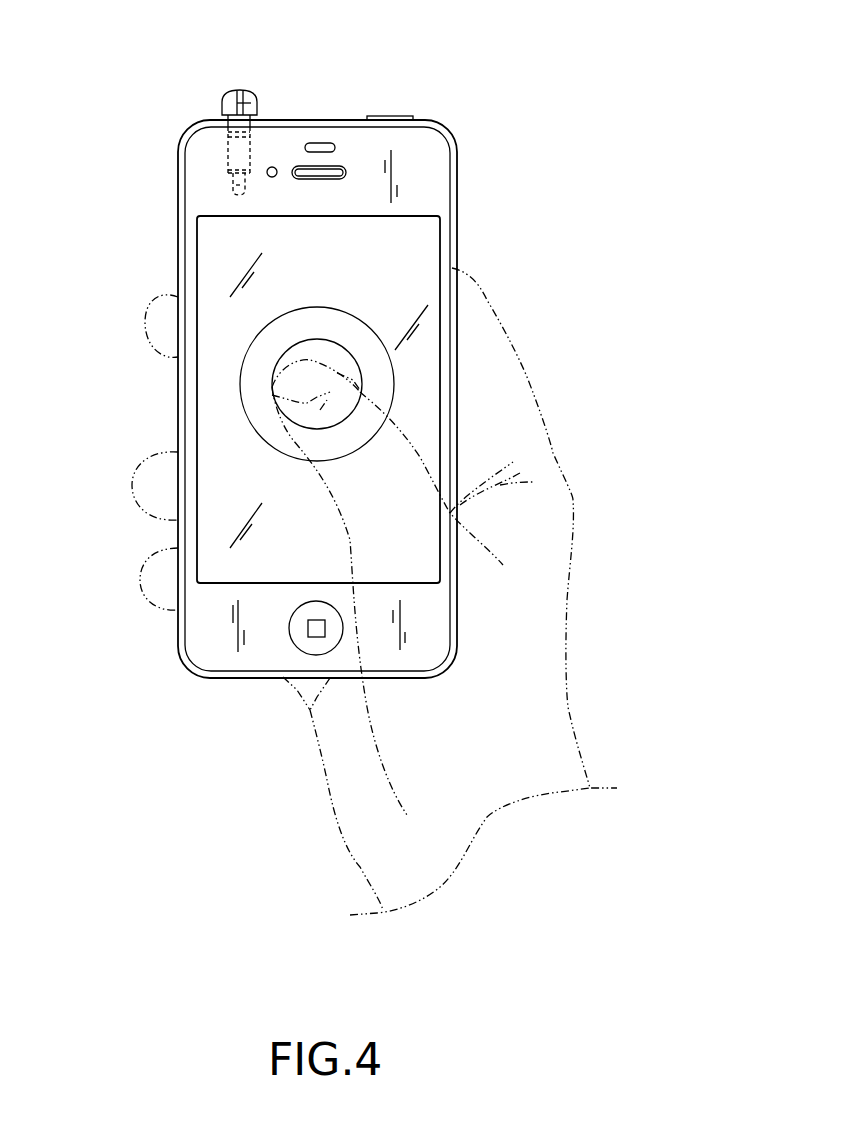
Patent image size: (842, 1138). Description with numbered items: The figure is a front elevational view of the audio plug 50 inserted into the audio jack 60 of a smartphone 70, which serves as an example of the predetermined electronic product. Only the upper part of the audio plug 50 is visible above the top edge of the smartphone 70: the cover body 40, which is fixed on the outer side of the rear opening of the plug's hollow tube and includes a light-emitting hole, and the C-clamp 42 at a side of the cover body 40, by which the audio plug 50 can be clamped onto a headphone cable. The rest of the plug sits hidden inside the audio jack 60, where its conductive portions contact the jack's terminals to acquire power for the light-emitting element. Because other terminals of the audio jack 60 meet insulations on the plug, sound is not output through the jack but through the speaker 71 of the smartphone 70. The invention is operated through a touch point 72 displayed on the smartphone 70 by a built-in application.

The cover body 40 is at (224, 96).
The C-clamp 42 is at (256, 104).
The audio plug 50 is at (202, 102).
The audio jack 60 is at (233, 148).
The smartphone 70 is at (447, 110).
The speaker 71 is at (327, 172).
The touch point 72 is at (348, 328).